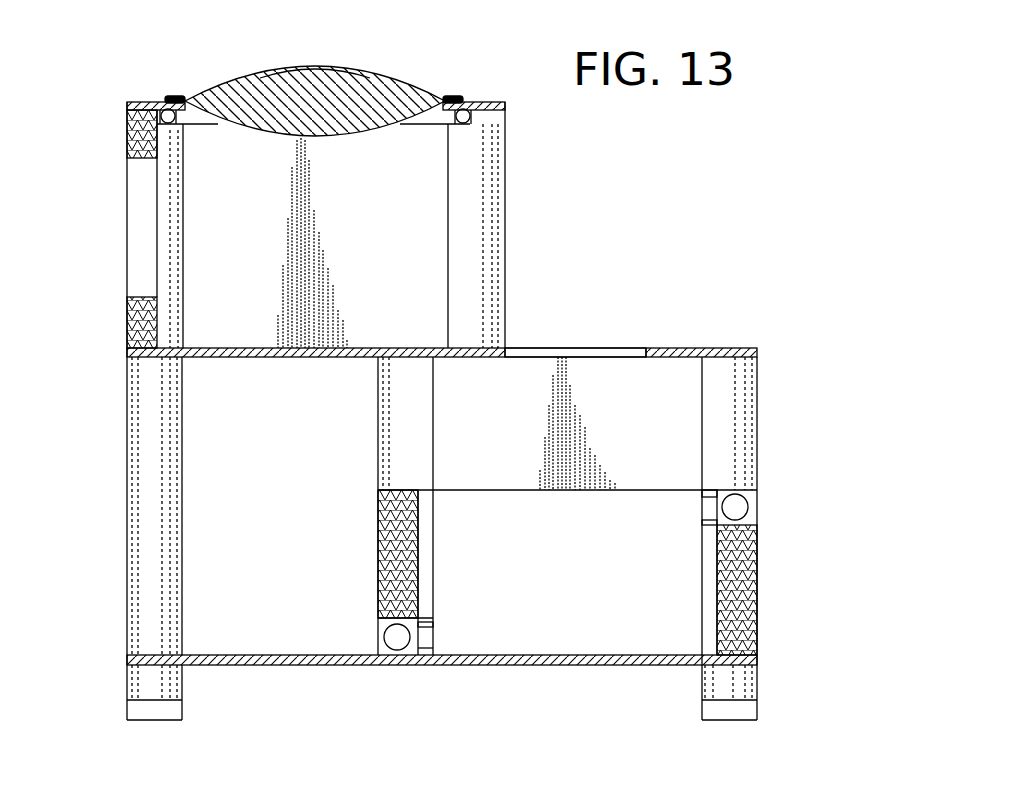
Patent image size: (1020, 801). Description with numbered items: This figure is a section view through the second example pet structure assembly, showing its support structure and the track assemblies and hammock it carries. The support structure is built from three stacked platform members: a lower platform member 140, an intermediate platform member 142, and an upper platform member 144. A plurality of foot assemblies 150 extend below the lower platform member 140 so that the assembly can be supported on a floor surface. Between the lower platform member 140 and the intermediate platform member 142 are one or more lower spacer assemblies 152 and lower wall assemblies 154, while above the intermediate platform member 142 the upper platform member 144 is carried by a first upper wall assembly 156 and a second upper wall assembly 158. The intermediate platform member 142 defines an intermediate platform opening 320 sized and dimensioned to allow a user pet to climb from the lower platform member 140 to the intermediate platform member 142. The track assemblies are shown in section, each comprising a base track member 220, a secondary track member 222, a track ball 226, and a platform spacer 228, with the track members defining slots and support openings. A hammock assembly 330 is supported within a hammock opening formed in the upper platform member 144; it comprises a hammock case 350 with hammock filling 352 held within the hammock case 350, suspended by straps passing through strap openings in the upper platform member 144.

The lower platform member 140 is at (570, 665).
The intermediate platform member 142 is at (688, 352).
The upper platform member 144 is at (140, 101).
The foot assembly 150 is at (126, 688).
The lower spacer assembly 152 is at (126, 455).
The lower wall assembly 154 is at (760, 393).
The first upper wall assembly 156 is at (126, 130).
The second upper wall assembly 158 is at (509, 196).
The base track member 220 is at (433, 648).
The secondary track member 222 is at (433, 625).
The track ball 226 is at (384, 640).
The platform spacer 228 is at (376, 555).
The intermediate platform opening 320 is at (600, 350).
The hammock assembly 330 is at (230, 73).
The hammock case 350 is at (280, 67).
The hammock filling 352 is at (332, 82).